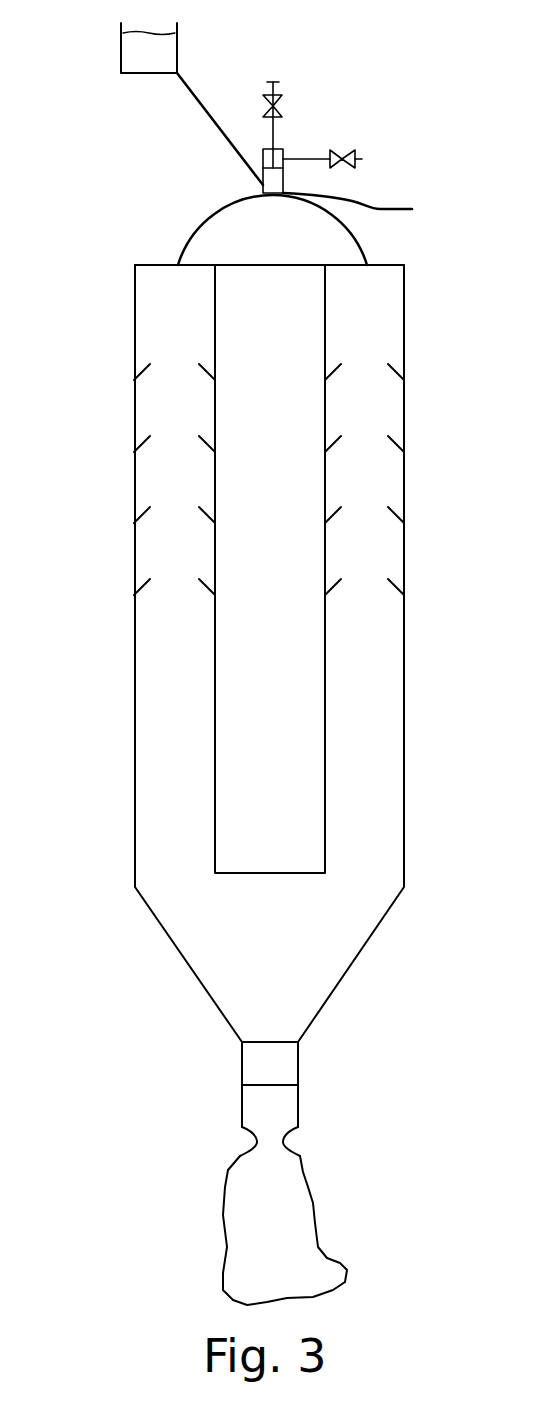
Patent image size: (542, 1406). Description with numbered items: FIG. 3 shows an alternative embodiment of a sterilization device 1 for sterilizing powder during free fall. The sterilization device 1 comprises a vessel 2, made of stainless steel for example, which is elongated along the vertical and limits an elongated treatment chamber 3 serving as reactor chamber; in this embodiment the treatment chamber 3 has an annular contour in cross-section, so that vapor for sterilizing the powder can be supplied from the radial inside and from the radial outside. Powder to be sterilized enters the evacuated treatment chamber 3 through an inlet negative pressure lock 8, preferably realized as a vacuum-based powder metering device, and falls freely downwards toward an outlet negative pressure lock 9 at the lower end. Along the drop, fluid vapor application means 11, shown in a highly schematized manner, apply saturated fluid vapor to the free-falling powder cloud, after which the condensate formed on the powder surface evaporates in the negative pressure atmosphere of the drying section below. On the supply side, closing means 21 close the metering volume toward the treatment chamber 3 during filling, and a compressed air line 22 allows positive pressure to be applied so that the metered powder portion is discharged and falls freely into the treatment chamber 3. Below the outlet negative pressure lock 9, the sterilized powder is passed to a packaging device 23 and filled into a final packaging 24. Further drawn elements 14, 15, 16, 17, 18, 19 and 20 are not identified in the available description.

The sterilization device 1 is at (266, 658).
The vessel 2 is at (404, 402).
The treatment chamber 3 is at (377, 647).
The inlet negative pressure lock 8 is at (350, 125).
The outlet negative pressure lock 9 is at (272, 1065).
The fluid vapor application means 11 is at (205, 440).
The vessel wall 14 is at (135, 680).
The inner tube interior 15 is at (280, 728).
The inner tube wall 16 is at (215, 780).
The gas outlet line 17 is at (278, 188).
The valve 18 is at (353, 155).
The feed pipe 19 is at (227, 138).
The feed tank 20 is at (170, 48).
The closing means 21 is at (265, 198).
The compressed air line 22 is at (277, 88).
The packaging device 23 is at (225, 1111).
The final packaging 24 is at (313, 1197).